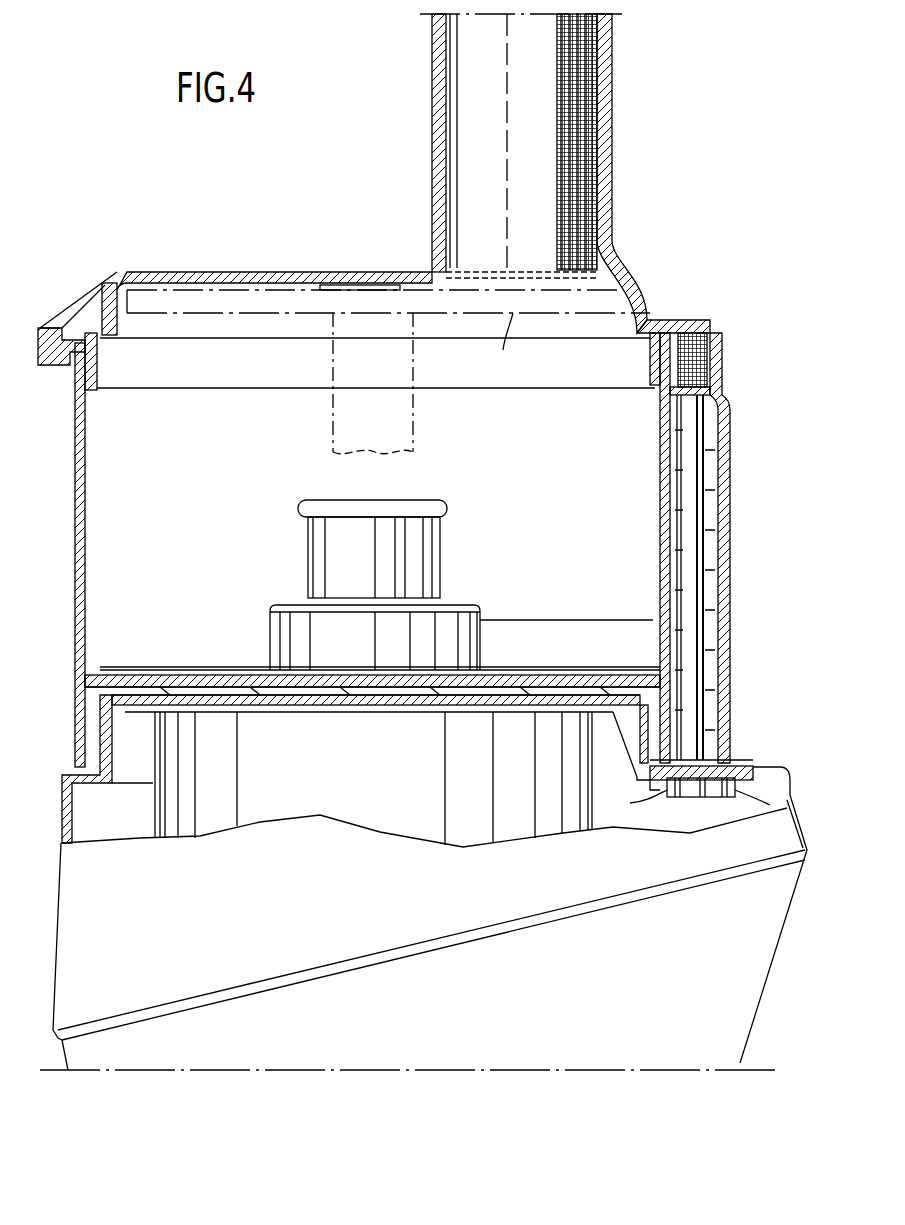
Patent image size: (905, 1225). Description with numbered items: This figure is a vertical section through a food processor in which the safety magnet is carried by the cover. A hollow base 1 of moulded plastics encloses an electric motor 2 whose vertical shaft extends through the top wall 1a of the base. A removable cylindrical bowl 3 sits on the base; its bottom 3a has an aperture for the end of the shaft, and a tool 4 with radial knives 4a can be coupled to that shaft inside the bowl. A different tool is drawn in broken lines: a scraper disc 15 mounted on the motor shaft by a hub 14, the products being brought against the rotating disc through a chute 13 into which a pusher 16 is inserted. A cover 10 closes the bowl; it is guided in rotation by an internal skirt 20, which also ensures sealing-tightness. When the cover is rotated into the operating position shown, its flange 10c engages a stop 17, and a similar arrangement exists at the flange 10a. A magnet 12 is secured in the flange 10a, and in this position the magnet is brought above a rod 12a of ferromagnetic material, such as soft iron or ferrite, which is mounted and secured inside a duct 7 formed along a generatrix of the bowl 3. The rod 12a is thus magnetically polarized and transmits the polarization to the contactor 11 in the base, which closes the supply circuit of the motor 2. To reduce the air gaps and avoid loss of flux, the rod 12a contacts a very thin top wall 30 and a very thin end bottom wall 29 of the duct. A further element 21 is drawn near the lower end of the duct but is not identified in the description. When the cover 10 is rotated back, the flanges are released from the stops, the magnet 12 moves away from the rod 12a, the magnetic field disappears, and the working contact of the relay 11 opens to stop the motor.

The hollow base 1 is at (262, 915).
The top wall of the base 1a is at (530, 705).
The electric motor 2 is at (324, 762).
The bowl 3 is at (75, 548).
The bottom of the bowl 3a is at (575, 680).
The tool 4 is at (430, 545).
The radial knives 4a is at (578, 620).
The duct 7 is at (730, 465).
The cover 10 is at (250, 270).
The flange of the cover 10a is at (690, 322).
The flange of the cover 10c is at (60, 362).
The contactor 11 is at (690, 790).
The magnet 12 is at (700, 355).
The ferromagnetic rod 12a is at (690, 570).
The chute 13 is at (612, 90).
The hub 14 is at (440, 452).
The scraper disc 15 is at (503, 350).
The pusher 16 is at (556, 180).
The stop 17 is at (65, 345).
The internal skirt 20 is at (95, 365).
The bottom plate 21 is at (718, 690).
The end bottom wall 29 is at (745, 770).
The top wall 30 is at (665, 395).